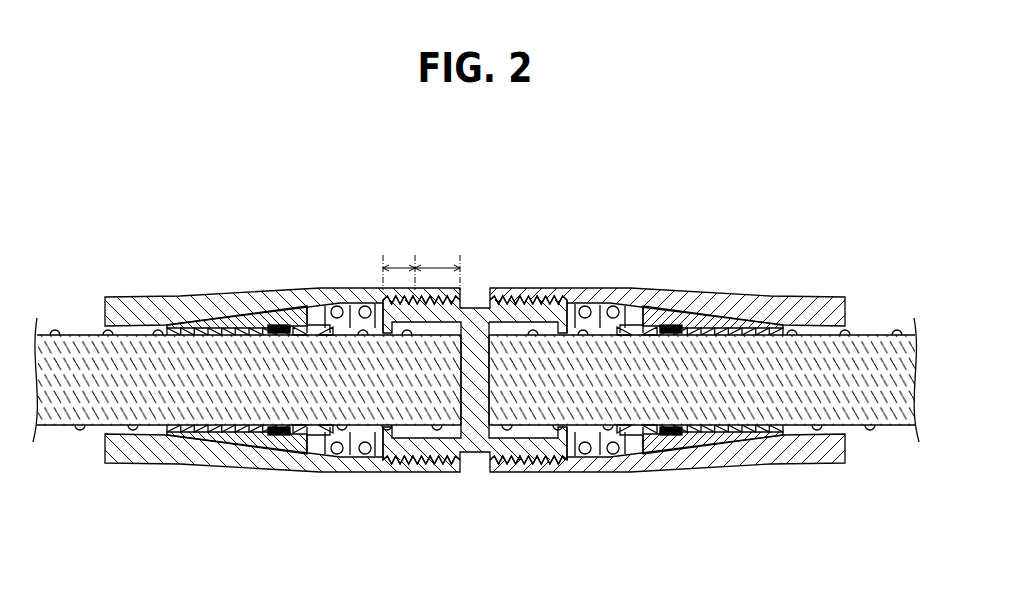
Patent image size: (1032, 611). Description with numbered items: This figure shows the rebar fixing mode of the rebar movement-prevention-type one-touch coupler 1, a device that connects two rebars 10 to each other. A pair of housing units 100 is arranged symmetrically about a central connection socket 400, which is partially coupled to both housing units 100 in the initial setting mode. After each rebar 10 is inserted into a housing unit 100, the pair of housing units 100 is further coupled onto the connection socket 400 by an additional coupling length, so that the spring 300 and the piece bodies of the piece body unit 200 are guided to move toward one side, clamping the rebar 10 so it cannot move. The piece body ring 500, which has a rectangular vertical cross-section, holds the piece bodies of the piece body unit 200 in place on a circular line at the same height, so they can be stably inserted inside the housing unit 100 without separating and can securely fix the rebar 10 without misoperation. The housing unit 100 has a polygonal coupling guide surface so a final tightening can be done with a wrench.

The rebar movement-prevention-type one-touch coupler 1 is at (40, 159).
The rebar 10 is at (229, 388).
The housing unit 100 is at (197, 296).
The piece body unit 200 is at (245, 467).
The spring 300 is at (340, 462).
The connection socket 400 is at (466, 466).
The piece body ring 500 is at (277, 323).